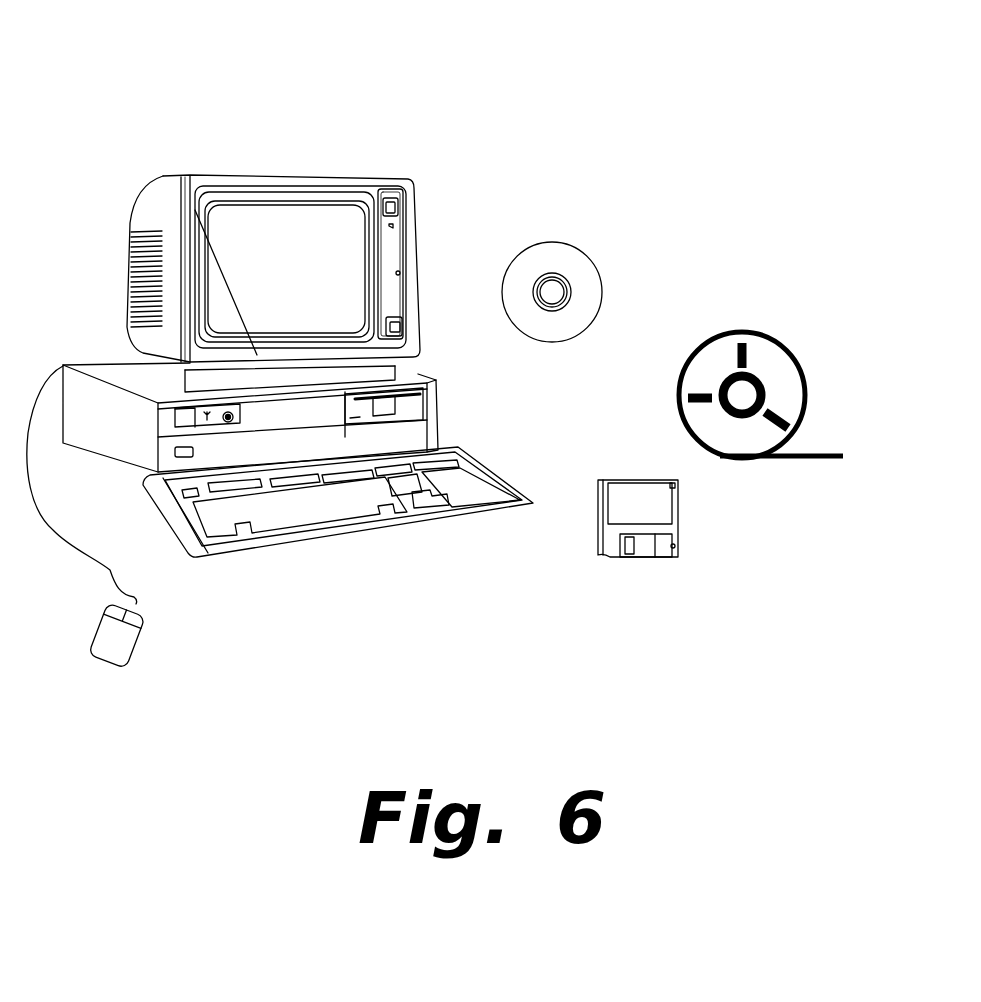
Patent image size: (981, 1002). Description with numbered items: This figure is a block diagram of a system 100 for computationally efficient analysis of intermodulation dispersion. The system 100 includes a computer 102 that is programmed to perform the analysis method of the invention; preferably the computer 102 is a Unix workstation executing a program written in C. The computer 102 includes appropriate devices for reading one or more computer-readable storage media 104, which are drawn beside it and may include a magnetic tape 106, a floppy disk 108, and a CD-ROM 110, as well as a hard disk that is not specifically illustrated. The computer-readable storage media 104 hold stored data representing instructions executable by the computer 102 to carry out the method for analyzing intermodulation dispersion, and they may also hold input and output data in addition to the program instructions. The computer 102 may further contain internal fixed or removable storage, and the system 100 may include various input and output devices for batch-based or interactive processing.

The system 100 is at (455, 145).
The computer 102 is at (442, 425).
The computer-readable storage media 104 is at (800, 553).
The magnetic tape 106 is at (760, 333).
The floppy disk 108 is at (638, 557).
The CD-ROM 110 is at (590, 262).